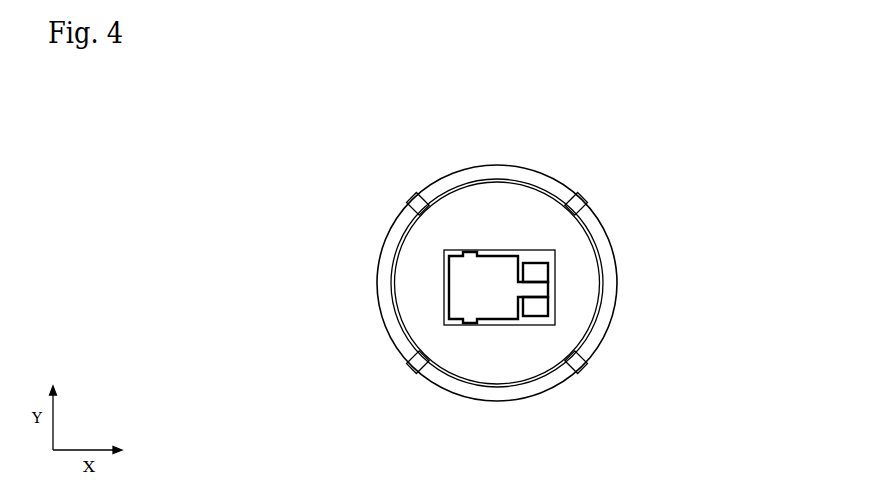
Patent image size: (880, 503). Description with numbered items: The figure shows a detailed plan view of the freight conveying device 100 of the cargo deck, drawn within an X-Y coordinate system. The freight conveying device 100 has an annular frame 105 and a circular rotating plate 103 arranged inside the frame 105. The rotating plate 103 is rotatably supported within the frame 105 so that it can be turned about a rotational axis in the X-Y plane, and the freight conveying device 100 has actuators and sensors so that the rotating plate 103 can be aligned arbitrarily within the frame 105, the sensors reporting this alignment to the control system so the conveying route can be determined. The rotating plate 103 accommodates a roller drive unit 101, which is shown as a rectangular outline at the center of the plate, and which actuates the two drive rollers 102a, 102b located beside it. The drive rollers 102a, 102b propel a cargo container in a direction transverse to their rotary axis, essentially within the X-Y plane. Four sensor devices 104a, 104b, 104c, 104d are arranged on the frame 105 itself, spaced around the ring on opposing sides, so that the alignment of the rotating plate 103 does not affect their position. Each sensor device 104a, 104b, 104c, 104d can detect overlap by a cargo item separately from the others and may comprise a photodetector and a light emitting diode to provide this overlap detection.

The freight conveying device 100 is at (442, 156).
The roller drive unit 101 is at (484, 312).
The drive roller 102a is at (540, 308).
The drive roller 102b is at (540, 272).
The rotating plate 103 is at (577, 294).
The sensor device 104a is at (422, 367).
The sensor device 104b is at (417, 203).
The sensor device 104c is at (573, 202).
The sensor device 104d is at (578, 361).
The annular frame 105 is at (388, 253).